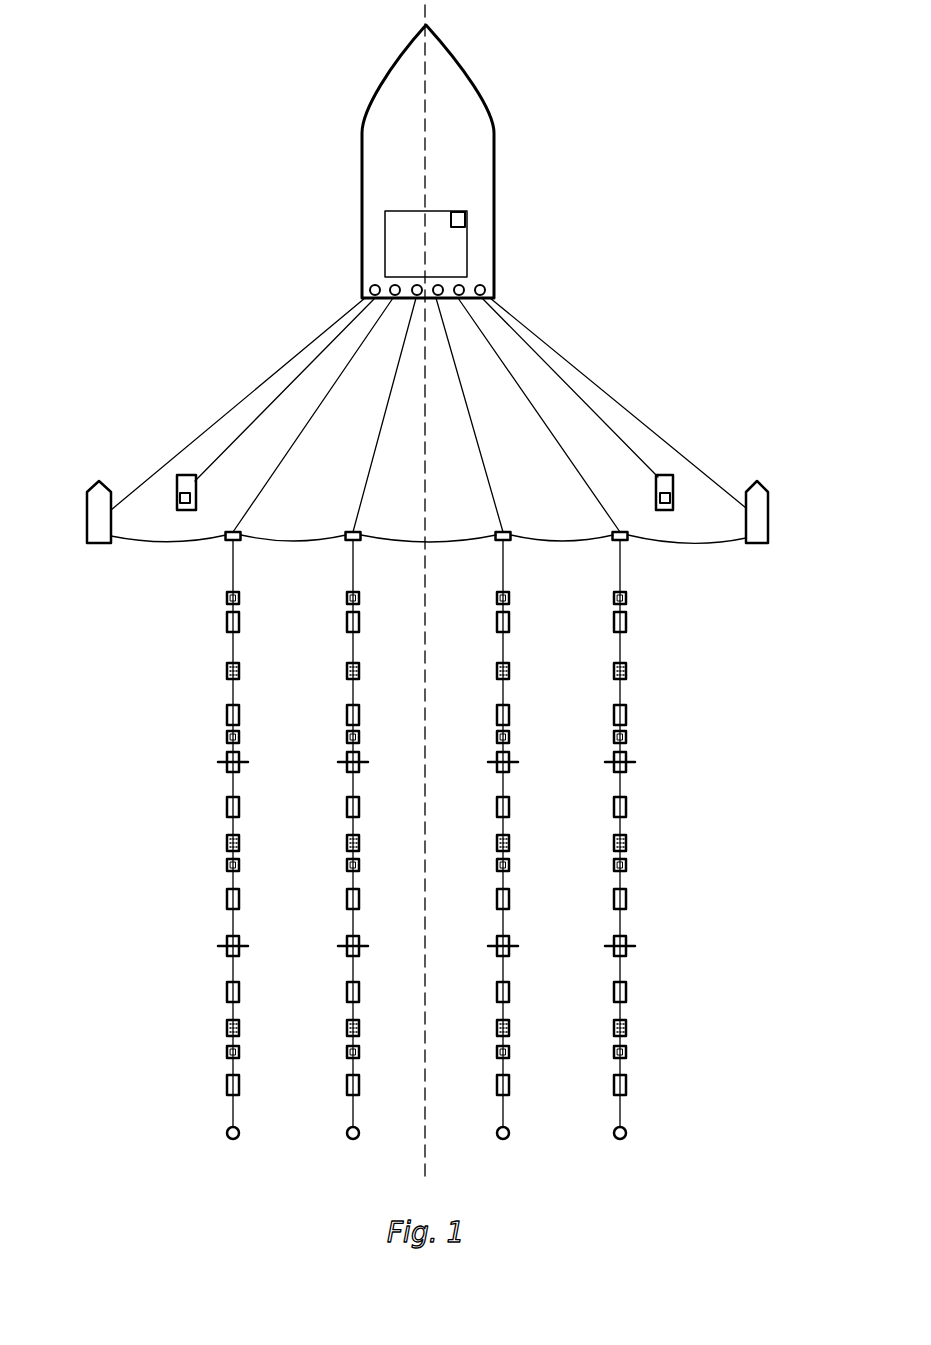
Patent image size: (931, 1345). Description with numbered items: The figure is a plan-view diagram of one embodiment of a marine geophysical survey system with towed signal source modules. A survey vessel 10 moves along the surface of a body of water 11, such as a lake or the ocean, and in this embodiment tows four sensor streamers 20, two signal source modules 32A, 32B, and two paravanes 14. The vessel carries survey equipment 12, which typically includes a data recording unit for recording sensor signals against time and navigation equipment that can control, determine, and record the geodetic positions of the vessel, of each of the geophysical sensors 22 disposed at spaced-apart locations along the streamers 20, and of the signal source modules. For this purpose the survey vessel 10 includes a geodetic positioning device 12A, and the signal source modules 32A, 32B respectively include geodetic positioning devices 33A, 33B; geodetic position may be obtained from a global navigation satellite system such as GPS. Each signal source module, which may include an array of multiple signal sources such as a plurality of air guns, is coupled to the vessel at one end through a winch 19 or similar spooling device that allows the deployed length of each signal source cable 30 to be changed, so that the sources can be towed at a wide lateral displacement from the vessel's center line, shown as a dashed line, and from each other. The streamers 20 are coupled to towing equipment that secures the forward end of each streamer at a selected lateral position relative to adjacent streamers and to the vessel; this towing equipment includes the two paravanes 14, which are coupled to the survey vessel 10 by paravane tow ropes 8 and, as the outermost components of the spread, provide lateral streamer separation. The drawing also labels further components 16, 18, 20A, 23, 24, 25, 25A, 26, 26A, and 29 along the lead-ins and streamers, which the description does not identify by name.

The paravane tow ropes 8 is at (266, 386).
The survey vessel 10 is at (412, 137).
The body of water 11 is at (560, 54).
The survey equipment 12 is at (447, 210).
The geodetic positioning device 12A is at (466, 220).
The paravanes 14 is at (769, 514).
The outer lead-in cable 16 is at (255, 503).
The inner lead-in cable 18 is at (375, 453).
The winch 19 is at (368, 289).
The sensor streamers 20 is at (354, 573).
The streamer head 20A is at (351, 531).
The geophysical sensors 22 is at (360, 620).
The acoustic positioning device 23 is at (360, 672).
The spreader rope 24 is at (398, 540).
The tail buoy 25 is at (354, 1140).
The tail buoy positioning device 25A is at (360, 1133).
The streamer steering device (bird) 26 is at (360, 757).
The steering device wings 26A is at (360, 766).
The acoustic transceiver 29 is at (360, 598).
The signal source cable 30 is at (326, 352).
The signal source module 32A is at (185, 476).
The signal source module 32B is at (667, 476).
The geodetic positioning device 33A is at (179, 501).
The geodetic positioning device 33B is at (674, 500).